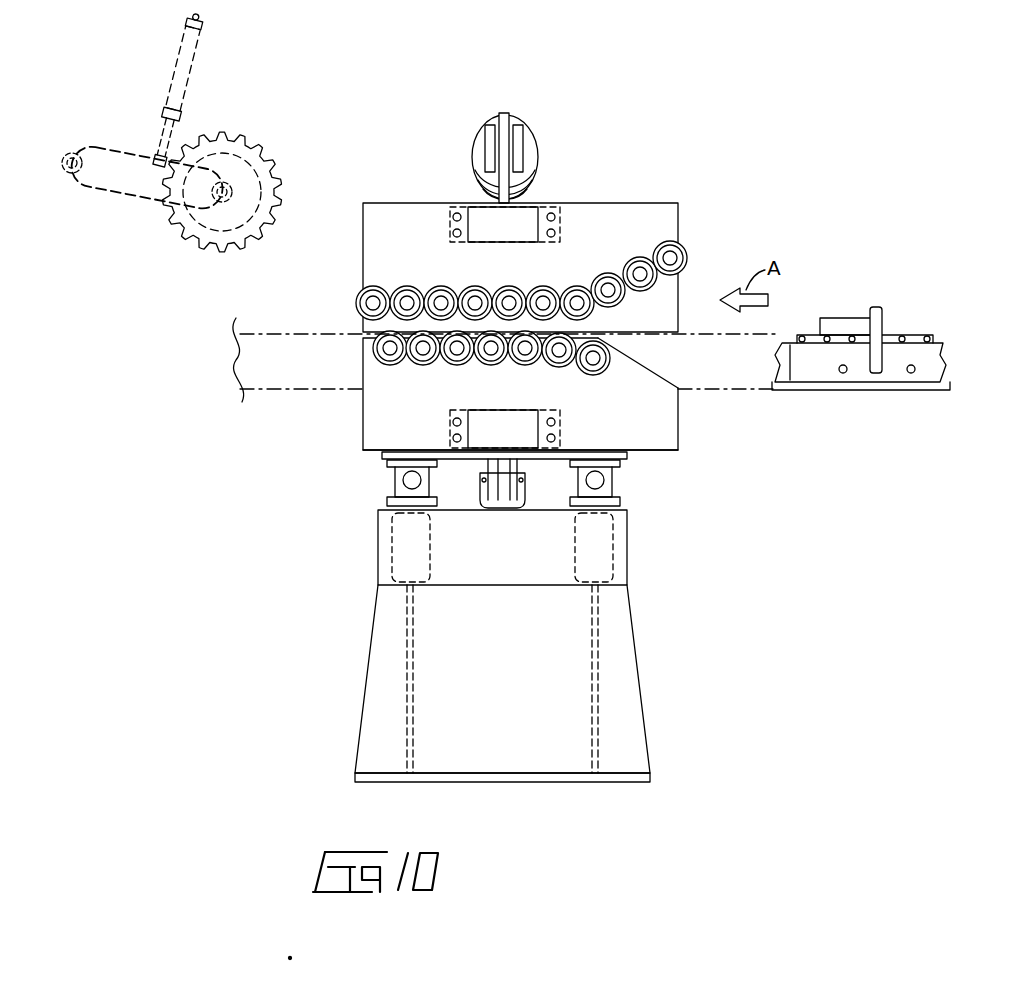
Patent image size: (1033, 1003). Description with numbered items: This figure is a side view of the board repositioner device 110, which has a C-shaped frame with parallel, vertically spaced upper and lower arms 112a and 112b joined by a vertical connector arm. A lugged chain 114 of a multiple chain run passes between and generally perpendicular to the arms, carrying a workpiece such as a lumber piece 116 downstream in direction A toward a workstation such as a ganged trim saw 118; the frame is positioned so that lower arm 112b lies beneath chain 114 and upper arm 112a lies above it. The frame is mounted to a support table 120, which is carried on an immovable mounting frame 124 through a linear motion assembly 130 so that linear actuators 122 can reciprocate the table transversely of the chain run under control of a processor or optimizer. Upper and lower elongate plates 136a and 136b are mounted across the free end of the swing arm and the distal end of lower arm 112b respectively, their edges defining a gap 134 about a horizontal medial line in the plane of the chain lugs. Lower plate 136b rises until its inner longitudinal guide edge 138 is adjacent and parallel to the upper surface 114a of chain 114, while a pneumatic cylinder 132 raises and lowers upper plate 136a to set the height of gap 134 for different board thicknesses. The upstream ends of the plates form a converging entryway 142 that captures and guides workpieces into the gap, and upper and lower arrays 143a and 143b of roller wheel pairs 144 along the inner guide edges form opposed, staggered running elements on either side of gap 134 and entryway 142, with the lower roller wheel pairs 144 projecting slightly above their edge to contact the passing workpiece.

The board repositioner device 110 is at (296, 456).
The upper arm 112a is at (522, 218).
The lower arm 112b is at (543, 425).
The lugged chain 114 is at (890, 337).
The upper surface of chain 114a is at (815, 350).
The lumber piece 116 is at (835, 325).
The ganged trim saw 118 is at (227, 140).
The support table 120 is at (380, 460).
The linear actuators 122 is at (482, 488).
The mounting frame 124 is at (382, 560).
The linear motion assembly 130 is at (393, 480).
The pneumatic cylinder 132 is at (527, 145).
The gap 134 is at (368, 327).
The upper elongate plate 136a is at (385, 222).
The lower elongate plate 136b is at (385, 422).
The guide ramp 138 is at (605, 334).
The converging entryway 142 is at (662, 312).
The upper array of roller wheel pairs 143a is at (693, 240).
The lower array of roller wheel pairs 143b is at (620, 372).
The roller wheel pairs 144 is at (398, 290).